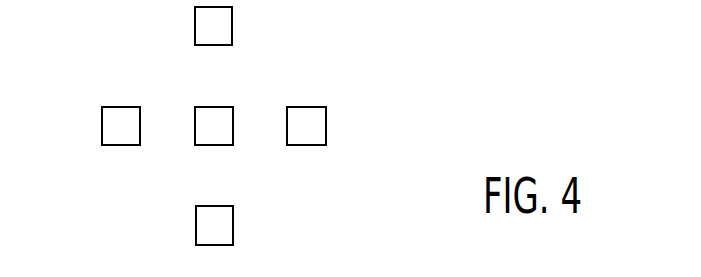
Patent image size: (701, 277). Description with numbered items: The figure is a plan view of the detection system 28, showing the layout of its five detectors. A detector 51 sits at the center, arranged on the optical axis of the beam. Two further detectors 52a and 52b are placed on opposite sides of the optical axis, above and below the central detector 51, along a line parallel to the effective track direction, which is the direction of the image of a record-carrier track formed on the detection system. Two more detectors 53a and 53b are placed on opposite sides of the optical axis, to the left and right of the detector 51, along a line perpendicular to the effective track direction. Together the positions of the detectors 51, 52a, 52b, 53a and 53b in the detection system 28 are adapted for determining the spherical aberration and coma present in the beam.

The detection system 28 is at (36, 66).
The detector 51 is at (220, 112).
The detector 52a is at (203, 25).
The detector 52b is at (222, 227).
The detector 53a is at (318, 128).
The detector 53b is at (112, 125).